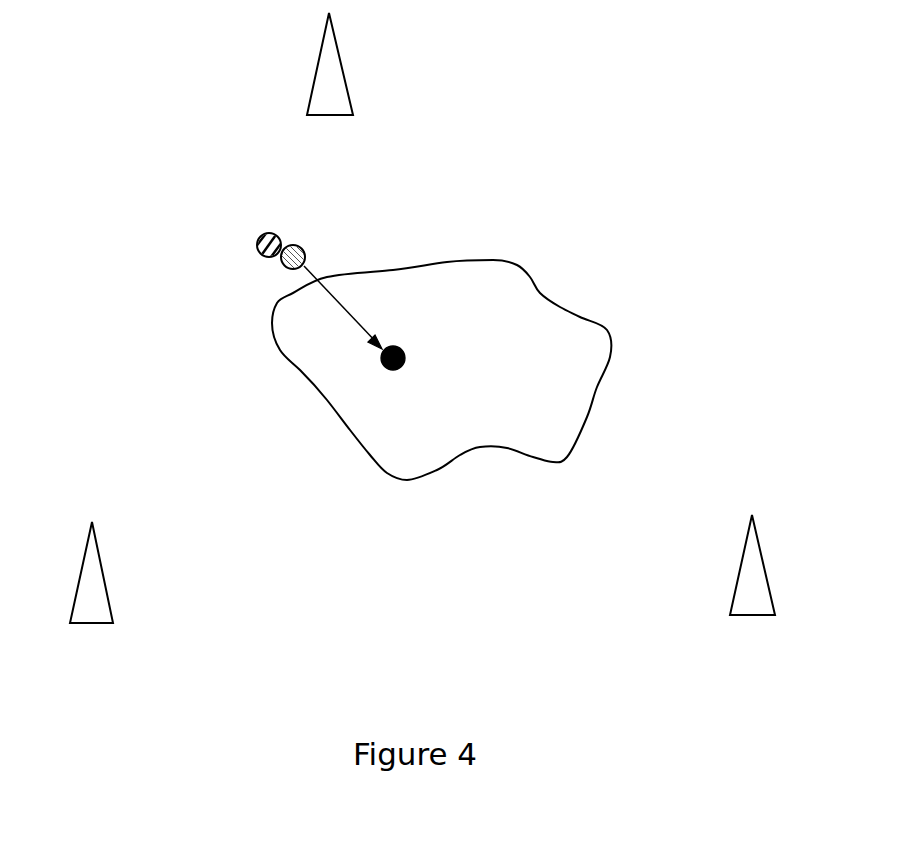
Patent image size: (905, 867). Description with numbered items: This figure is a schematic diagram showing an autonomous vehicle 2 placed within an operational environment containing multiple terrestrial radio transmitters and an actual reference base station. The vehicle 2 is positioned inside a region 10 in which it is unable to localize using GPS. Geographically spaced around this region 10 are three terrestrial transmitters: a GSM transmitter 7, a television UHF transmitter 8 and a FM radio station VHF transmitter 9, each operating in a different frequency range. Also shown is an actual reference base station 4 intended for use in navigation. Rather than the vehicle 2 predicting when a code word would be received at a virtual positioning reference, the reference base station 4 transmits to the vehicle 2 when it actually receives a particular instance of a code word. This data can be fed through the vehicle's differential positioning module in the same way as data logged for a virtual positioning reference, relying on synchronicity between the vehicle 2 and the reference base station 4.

The vehicle 2 is at (362, 363).
The reference base station 4 is at (257, 247).
The GSM transmitter 7 is at (330, 64).
The television UHF transmitter 8 is at (752, 565).
The FM radio station VHF transmitter 9 is at (91, 572).
The region 10 is at (481, 385).